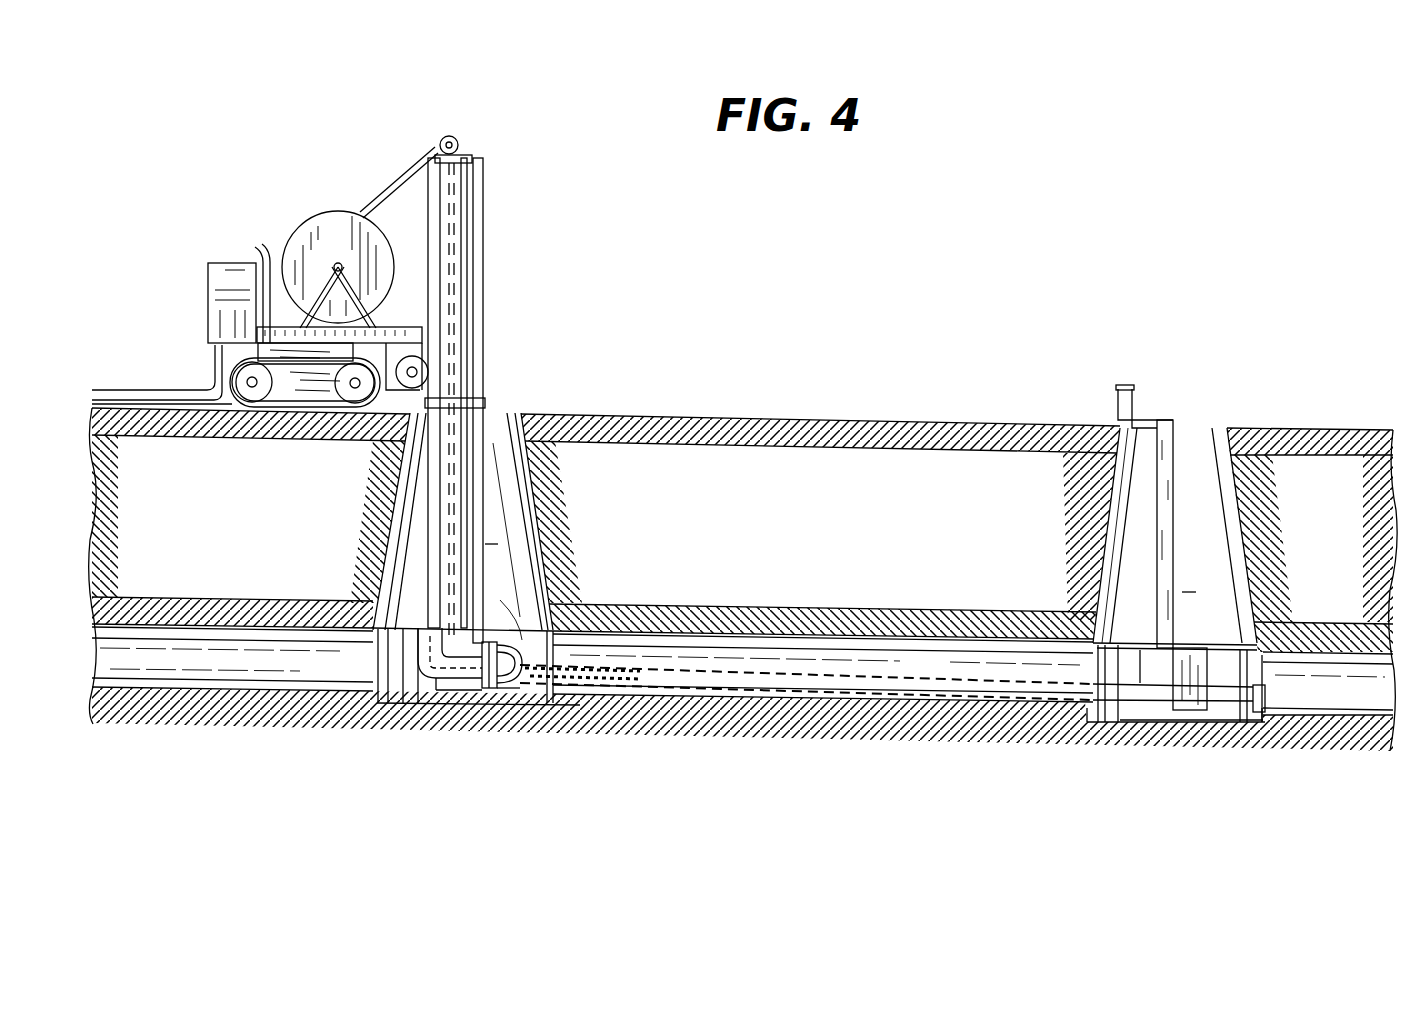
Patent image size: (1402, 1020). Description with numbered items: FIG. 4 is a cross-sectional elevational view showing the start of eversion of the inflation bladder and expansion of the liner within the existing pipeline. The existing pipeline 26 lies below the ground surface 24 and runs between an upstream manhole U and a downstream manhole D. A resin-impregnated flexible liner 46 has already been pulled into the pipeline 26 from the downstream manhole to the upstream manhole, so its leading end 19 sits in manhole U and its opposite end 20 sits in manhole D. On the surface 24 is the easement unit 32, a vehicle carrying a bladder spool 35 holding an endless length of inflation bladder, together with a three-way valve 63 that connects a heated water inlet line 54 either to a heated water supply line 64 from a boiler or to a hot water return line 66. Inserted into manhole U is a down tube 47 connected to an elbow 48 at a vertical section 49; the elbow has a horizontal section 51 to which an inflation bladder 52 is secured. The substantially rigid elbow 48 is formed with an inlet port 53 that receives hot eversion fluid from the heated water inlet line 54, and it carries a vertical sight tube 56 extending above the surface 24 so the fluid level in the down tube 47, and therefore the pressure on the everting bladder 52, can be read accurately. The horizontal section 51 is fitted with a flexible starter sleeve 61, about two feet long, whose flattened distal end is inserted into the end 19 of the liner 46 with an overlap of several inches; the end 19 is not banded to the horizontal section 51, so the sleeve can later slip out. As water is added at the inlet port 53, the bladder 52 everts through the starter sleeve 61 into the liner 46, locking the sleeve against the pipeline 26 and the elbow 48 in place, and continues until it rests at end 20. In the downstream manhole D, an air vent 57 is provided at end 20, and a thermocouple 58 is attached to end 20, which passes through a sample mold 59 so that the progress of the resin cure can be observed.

The leading end of liner 19 is at (503, 697).
The end of liner 20 is at (1224, 722).
The surface 24 is at (806, 418).
The existing pipeline 26 is at (655, 622).
The easement unit 32 is at (236, 250).
The bladder spool 35 is at (303, 232).
The liner 46 is at (782, 670).
The down tube 47 is at (470, 285).
The elbow 48 is at (445, 665).
The vertical section 49 is at (418, 663).
The horizontal section 51 is at (489, 690).
The inflation bladder 52 is at (393, 183).
The inlet port 53 is at (410, 650).
The heated water inlet line 54 is at (420, 548).
The vertical sight tube 56 is at (487, 372).
The air vent 57 is at (1250, 725).
The thermocouple 58 is at (1167, 455).
The sample mold 59 is at (1195, 668).
The starter sleeve 61 is at (515, 622).
The 3-way valve 63 is at (208, 290).
The heated water supply line 64 is at (150, 406).
The hot water return line 66 is at (167, 392).